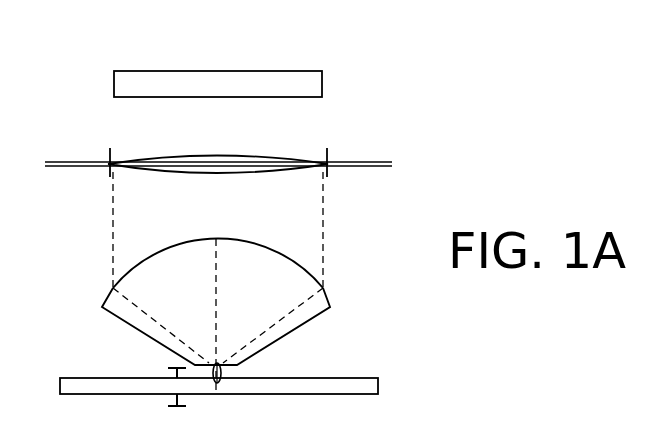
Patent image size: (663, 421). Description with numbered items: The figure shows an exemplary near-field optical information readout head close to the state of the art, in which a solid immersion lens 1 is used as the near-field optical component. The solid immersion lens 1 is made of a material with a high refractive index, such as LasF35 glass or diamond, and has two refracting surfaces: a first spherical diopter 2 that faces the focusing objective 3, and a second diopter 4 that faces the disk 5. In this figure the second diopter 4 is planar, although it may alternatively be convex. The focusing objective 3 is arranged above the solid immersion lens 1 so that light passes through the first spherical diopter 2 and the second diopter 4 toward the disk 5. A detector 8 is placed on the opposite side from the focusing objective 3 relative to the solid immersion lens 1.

The solid immersion lens 1 is at (332, 302).
The first spherical diopter 2 is at (298, 262).
The focusing objective 3 is at (300, 167).
The second diopter 4 is at (200, 374).
The disk 5 is at (372, 383).
The detector 8 is at (318, 79).